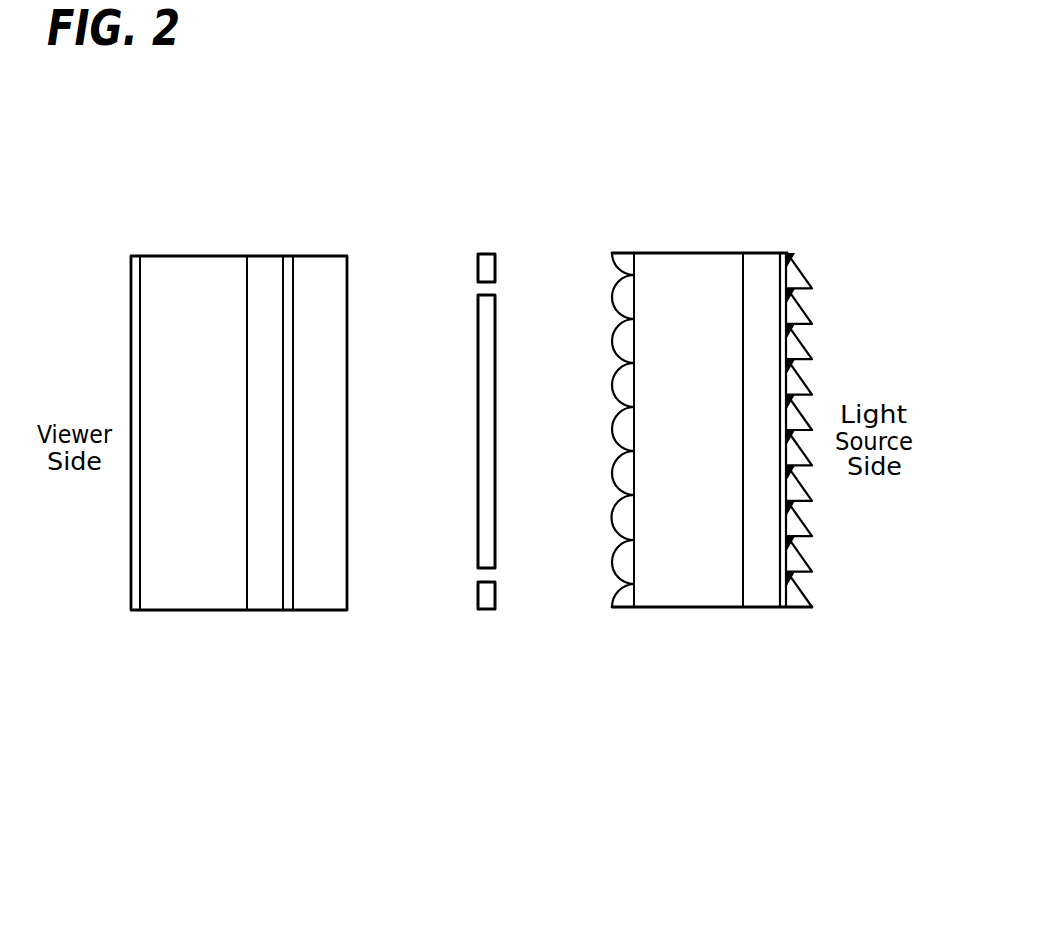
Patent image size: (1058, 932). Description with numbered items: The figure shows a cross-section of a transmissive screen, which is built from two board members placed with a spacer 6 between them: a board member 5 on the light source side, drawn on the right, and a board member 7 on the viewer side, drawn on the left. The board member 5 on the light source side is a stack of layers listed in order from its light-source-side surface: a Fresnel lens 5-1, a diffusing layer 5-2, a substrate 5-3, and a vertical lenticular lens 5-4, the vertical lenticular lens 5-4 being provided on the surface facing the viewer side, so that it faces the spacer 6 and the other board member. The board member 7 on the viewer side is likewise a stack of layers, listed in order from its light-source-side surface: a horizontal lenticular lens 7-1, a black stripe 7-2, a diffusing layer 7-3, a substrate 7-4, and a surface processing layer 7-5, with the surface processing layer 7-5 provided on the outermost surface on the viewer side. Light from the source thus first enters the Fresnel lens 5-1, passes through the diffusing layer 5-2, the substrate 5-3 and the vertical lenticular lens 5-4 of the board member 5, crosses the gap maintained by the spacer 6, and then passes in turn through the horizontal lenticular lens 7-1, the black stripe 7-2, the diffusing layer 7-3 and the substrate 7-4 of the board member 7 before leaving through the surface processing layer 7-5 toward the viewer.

The board member 7 is at (348, 157).
The horizontal lenticular lens 7-1 is at (320, 609).
The black stripe 7-2 is at (287, 268).
The diffusing layer 7-3 is at (263, 265).
The substrate 7-4 is at (185, 609).
The surface processing layer 7-5 is at (135, 612).
The spacer 6 is at (477, 303).
The board member 5 is at (810, 156).
The Fresnel lens 5-1 is at (787, 255).
The diffusing layer 5-2 is at (760, 606).
The substrate 5-3 is at (690, 265).
The vertical lenticular lens 5-4 is at (628, 603).